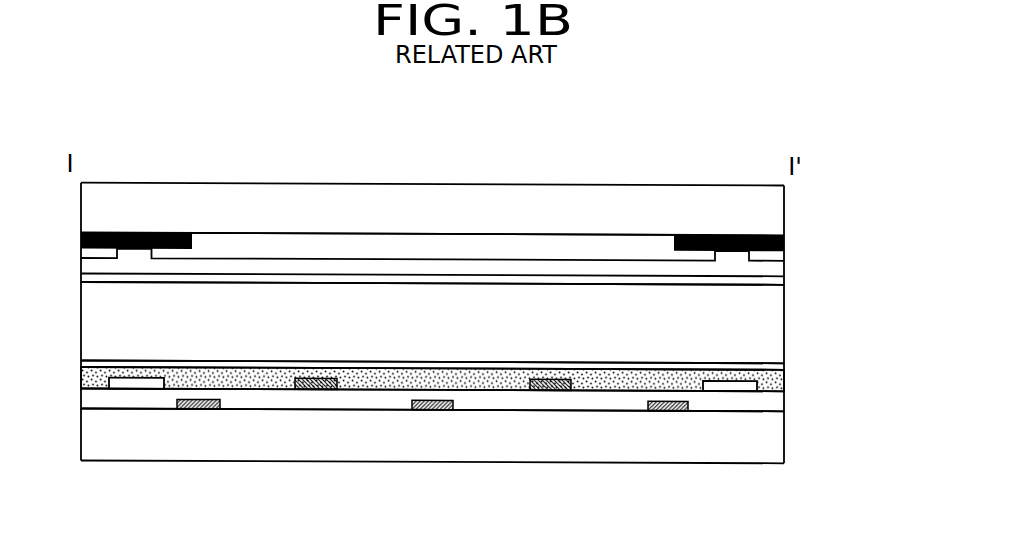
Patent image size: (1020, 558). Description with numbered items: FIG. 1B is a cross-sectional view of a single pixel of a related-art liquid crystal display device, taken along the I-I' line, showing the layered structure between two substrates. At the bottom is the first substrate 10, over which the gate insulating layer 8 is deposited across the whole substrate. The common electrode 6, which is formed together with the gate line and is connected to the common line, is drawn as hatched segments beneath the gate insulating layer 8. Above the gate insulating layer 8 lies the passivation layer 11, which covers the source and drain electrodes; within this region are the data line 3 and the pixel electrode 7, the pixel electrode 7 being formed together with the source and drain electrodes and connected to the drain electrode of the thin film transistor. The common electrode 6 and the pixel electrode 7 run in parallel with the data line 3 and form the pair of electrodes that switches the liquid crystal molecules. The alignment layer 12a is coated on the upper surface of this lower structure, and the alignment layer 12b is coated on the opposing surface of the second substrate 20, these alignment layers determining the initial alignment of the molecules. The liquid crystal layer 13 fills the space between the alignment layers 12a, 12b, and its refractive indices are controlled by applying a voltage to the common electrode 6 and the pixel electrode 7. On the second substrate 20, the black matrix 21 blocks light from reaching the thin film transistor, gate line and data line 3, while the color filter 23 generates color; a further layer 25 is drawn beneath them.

The data line 3 is at (133, 383).
The common electrode 6 is at (670, 497).
The pixel electrode 7 is at (558, 497).
The gate insulating layer 8 is at (772, 400).
The first substrate 10 is at (772, 443).
The passivation layer 11 is at (778, 382).
The alignment layer 12a is at (775, 365).
The alignment layer 12b is at (781, 280).
The liquid crystal layer 13 is at (772, 320).
The second substrate 20 is at (772, 212).
The black matrix 21 is at (715, 260).
The color filter 23 is at (498, 248).
The common electrode / overcoat layer 25 is at (780, 267).